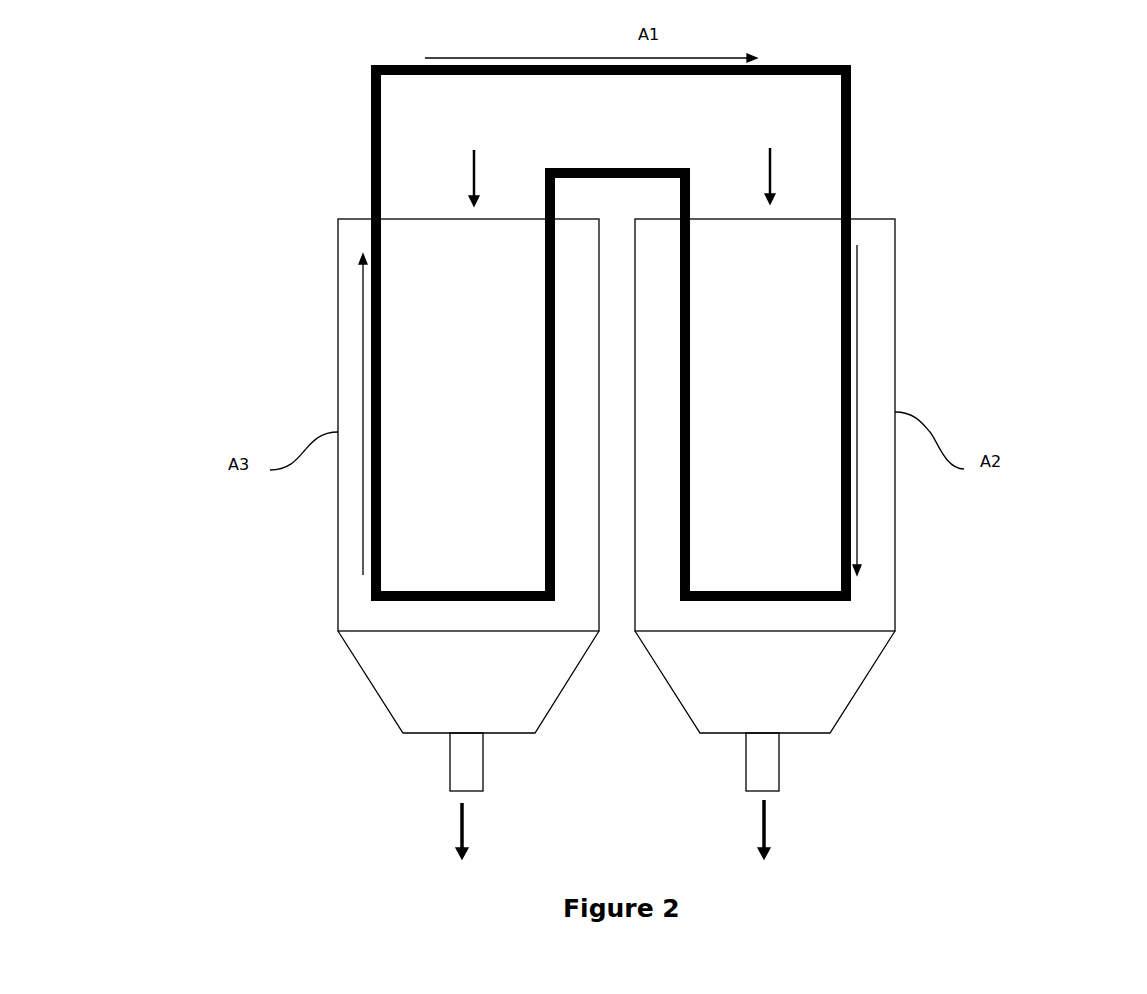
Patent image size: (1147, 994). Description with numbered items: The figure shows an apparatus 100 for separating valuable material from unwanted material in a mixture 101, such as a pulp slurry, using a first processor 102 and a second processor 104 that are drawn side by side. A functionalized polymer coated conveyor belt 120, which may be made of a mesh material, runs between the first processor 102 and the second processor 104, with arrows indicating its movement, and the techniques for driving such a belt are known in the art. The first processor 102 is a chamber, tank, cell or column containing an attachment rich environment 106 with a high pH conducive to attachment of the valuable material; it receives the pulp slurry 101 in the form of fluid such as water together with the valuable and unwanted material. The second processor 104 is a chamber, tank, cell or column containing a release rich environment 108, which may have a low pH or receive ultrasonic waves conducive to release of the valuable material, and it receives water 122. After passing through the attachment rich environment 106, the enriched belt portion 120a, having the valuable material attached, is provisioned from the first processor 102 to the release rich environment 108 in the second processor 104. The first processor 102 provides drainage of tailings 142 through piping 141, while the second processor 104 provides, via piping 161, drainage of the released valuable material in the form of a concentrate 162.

The apparatus 100 is at (978, 113).
The mixture 101 is at (470, 149).
The first processor 102 is at (338, 325).
The second processor 104 is at (817, 476).
The attachment rich environment 106 is at (462, 348).
The release rich environment 108 is at (765, 341).
The functionalized polymer coated conveyor belt 120 is at (358, 146).
The enriched portion of the belt 120a is at (371, 102).
The water 122 is at (770, 145).
The piping 141 is at (450, 770).
The tailings 142 is at (422, 840).
The piping 161 is at (779, 772).
The concentrate 162 is at (830, 838).